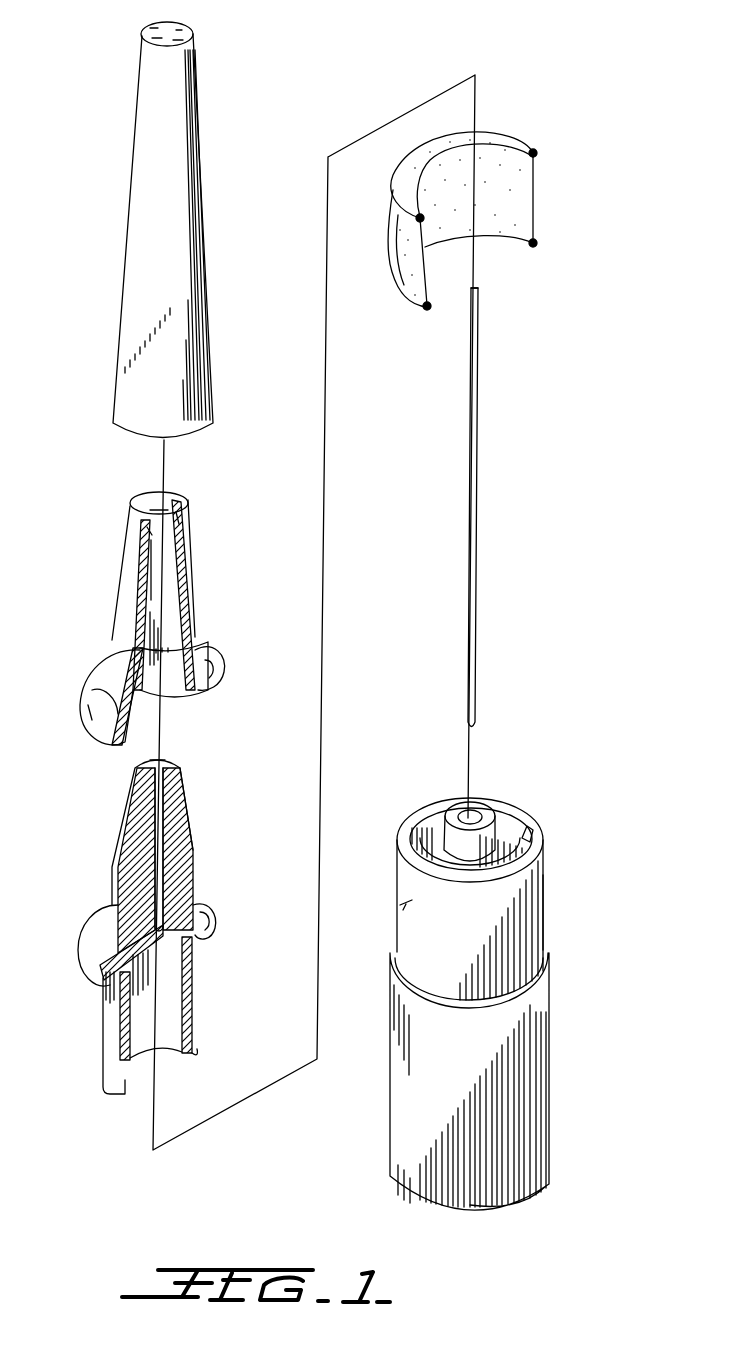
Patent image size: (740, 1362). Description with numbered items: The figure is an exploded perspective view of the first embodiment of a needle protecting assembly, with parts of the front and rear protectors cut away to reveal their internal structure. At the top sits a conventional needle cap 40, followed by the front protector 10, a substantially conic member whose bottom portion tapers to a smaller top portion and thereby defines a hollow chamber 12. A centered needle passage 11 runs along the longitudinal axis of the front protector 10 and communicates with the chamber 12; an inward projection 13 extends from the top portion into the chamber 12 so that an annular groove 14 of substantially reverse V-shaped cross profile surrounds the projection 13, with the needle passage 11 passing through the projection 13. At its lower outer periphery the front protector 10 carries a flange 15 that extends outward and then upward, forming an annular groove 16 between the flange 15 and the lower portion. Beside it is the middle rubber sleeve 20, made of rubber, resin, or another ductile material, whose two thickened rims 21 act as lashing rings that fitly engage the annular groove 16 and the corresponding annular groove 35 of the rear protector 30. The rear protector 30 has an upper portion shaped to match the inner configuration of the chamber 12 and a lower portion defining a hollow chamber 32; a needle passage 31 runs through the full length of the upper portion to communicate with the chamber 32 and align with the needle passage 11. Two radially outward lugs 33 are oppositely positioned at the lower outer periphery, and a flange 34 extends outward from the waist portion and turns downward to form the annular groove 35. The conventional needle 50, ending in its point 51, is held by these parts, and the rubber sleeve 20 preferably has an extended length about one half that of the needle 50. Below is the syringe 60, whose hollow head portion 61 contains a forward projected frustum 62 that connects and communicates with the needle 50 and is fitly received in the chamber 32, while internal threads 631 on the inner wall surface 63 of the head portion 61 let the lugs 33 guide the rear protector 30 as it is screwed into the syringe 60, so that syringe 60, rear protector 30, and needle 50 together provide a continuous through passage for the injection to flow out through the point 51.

The front protector 10 is at (190, 603).
The needle passage 11 is at (163, 510).
The hollow chamber 12 is at (173, 607).
The inward projection 13 is at (154, 533).
The annular groove 14 is at (178, 522).
The flange 15 is at (220, 680).
The annular groove 16 is at (210, 662).
The middle rubber sleeve 20 is at (496, 216).
The rims 21 is at (537, 153).
The rear protector 30 is at (176, 946).
The needle passage 31 is at (163, 768).
The hollow chamber 32 is at (170, 988).
The lugs 33 is at (112, 1097).
The flange 34 is at (215, 912).
The annular groove 35 is at (205, 934).
The needle cap 40 is at (204, 194).
The needle 50 is at (520, 504).
The point 51 is at (478, 290).
The syringe 60 is at (517, 985).
The head portion 61 is at (543, 915).
The frustum 62 is at (517, 822).
The inner wall surface 63 is at (514, 822).
The internal threads 631 is at (533, 830).